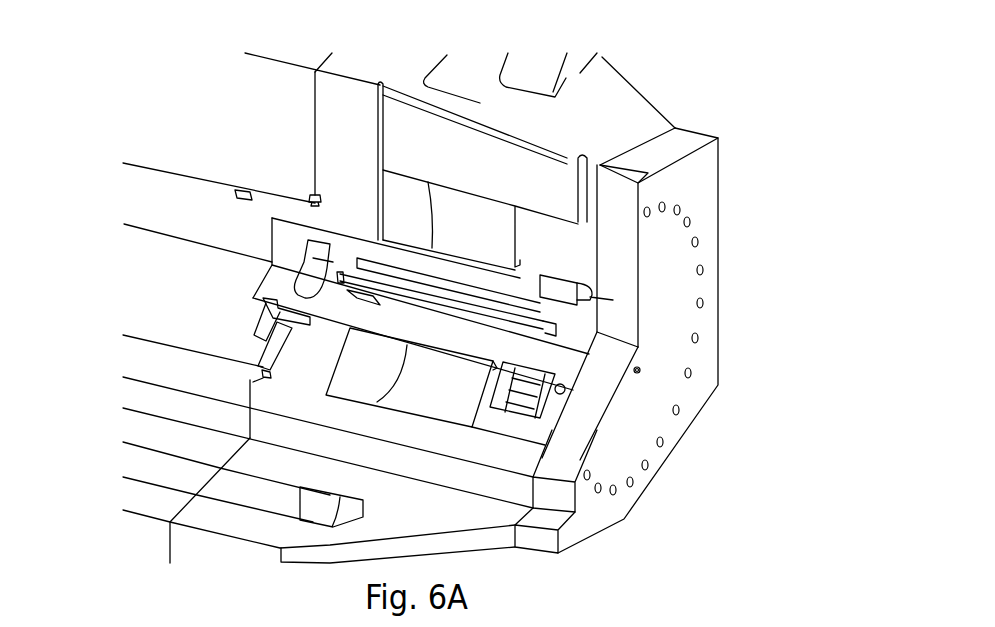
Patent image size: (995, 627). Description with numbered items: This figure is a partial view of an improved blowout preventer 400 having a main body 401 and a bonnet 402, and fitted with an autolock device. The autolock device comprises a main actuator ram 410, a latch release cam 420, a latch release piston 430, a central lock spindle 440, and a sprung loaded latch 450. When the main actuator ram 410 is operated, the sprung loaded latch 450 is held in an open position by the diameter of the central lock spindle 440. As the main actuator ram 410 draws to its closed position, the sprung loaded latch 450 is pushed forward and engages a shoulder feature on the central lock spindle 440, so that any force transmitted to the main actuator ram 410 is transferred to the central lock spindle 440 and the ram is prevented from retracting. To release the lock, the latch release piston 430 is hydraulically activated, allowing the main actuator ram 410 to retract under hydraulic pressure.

The blowout preventer 400 is at (587, 37).
The main body 401 is at (278, 102).
The bonnet 402 is at (632, 108).
The main actuator ram 410 is at (557, 257).
The latch release cam 420 is at (420, 322).
The latch release piston 430 is at (435, 324).
The central lock spindle 440 is at (577, 357).
The sprung loaded latch 450 is at (553, 363).